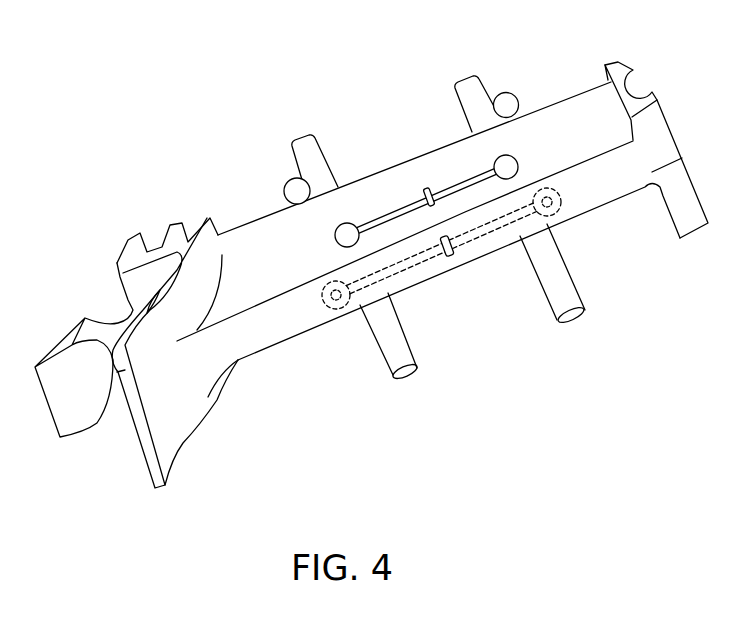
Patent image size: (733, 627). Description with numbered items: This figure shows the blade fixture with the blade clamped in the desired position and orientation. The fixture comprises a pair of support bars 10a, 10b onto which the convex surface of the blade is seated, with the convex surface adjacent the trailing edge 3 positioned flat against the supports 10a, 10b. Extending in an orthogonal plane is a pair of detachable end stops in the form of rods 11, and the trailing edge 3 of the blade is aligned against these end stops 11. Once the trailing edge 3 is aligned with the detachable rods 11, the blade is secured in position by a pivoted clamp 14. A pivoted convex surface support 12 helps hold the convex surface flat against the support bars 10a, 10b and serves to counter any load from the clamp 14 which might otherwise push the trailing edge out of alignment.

The trailing edge 3 is at (455, 158).
The support bar 10a is at (405, 377).
The support bar 10b is at (569, 320).
The rods 11 is at (285, 181).
The pivoted convex surface support 12 is at (466, 242).
The pivoted clamp 14 is at (426, 191).